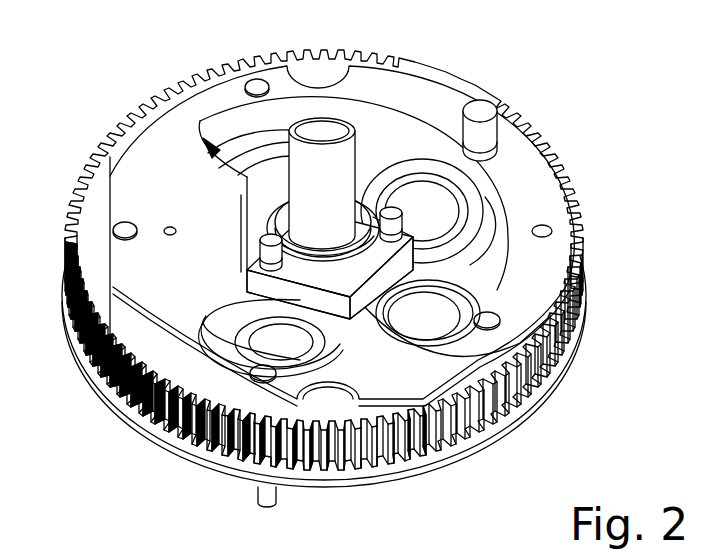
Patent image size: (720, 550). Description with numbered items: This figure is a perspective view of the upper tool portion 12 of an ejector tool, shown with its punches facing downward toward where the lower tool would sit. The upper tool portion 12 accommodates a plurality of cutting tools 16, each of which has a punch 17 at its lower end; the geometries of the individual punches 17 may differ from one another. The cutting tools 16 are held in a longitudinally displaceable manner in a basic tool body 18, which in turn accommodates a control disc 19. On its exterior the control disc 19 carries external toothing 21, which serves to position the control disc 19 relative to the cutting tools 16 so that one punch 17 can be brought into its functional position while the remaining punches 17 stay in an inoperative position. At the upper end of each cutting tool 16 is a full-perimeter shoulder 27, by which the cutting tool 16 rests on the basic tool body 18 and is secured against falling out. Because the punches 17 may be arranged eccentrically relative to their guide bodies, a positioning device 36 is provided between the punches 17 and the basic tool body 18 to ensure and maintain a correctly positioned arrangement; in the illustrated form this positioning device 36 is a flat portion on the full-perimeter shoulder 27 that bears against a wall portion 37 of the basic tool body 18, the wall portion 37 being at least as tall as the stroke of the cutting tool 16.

The upper tool portion 12 is at (531, 60).
The cutting tool 16 is at (409, 157).
The punch 17 is at (256, 497).
The basic tool body 18 is at (372, 157).
The control disc 19 is at (200, 340).
The external toothing 21 is at (580, 302).
The full-perimeter shoulder 27 is at (478, 212).
The positioning device 36 is at (427, 363).
The wall portion 37 is at (343, 320).